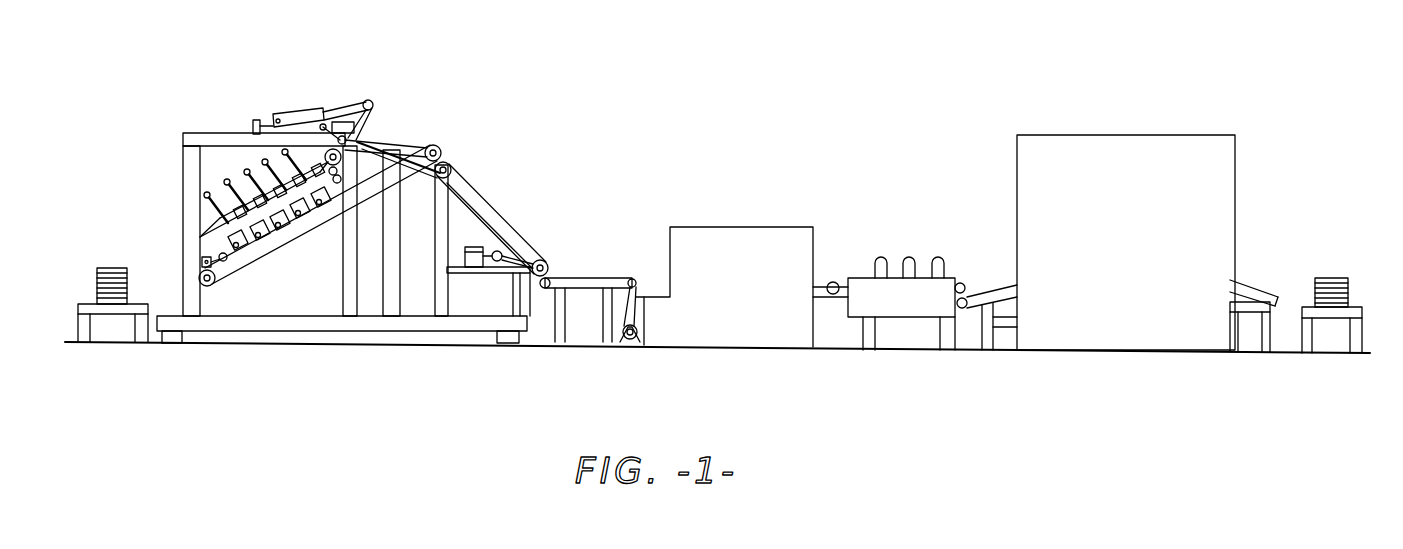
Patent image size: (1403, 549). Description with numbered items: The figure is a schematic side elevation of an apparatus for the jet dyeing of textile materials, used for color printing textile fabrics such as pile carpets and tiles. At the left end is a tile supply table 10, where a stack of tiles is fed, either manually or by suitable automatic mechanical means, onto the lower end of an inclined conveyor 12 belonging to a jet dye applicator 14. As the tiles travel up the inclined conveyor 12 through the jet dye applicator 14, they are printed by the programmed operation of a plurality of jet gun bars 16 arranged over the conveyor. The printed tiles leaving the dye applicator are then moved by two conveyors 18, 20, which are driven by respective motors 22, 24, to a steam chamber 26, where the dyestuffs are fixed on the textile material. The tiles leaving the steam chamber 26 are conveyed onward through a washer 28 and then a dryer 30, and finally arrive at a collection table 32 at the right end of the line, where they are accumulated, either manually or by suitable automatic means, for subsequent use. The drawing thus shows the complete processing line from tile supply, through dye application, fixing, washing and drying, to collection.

The tile supply table 10 is at (85, 280).
The inclined conveyor 12 is at (260, 256).
The jet dye applicator 14 is at (303, 95).
The jet gun bars 16 is at (228, 165).
The conveyor 18 is at (500, 205).
The conveyor 20 is at (565, 281).
The motor 22 is at (463, 247).
The motor 24 is at (622, 339).
The steam chamber 26 is at (725, 220).
The washer 28 is at (905, 242).
The dryer 30 is at (1122, 128).
The collection table 32 is at (1358, 272).